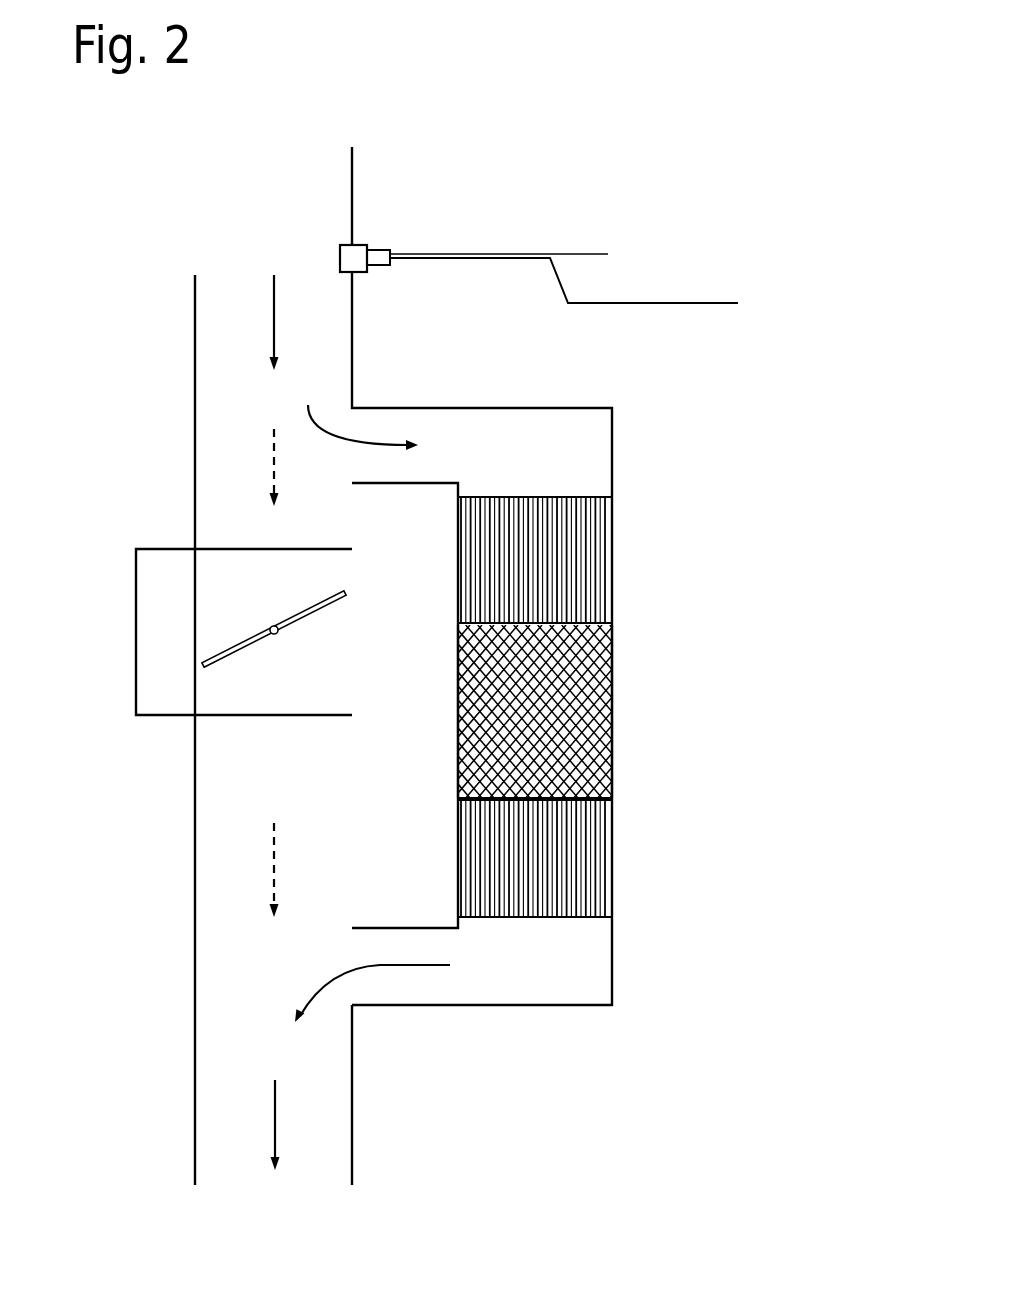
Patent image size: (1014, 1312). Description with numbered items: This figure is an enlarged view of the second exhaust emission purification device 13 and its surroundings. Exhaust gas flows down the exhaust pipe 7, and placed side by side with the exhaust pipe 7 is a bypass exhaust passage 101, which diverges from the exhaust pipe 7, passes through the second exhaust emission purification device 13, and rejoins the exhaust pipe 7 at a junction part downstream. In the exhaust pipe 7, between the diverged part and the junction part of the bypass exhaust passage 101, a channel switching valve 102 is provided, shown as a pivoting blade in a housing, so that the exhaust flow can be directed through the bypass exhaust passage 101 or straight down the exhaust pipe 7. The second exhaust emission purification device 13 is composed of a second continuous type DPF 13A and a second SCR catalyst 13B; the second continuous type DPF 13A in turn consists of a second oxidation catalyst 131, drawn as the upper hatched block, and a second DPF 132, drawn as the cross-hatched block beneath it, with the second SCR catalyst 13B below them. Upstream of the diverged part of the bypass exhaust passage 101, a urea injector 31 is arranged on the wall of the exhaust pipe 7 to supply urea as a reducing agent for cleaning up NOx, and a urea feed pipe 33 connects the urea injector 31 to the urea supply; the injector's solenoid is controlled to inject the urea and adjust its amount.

The exhaust pipe 7 is at (342, 1128).
The bypass exhaust passage 101 is at (463, 408).
The channel switching valve 102 is at (136, 673).
The urea injector 31 is at (357, 245).
The urea feed pipe 33 is at (647, 303).
The second exhaust emission purification device 13 is at (579, 707).
The second continuous type DPF 13A is at (551, 655).
The second oxidation catalyst 131 is at (597, 590).
The second DPF 132 is at (534, 713).
The second SCR catalyst 13B is at (625, 858).